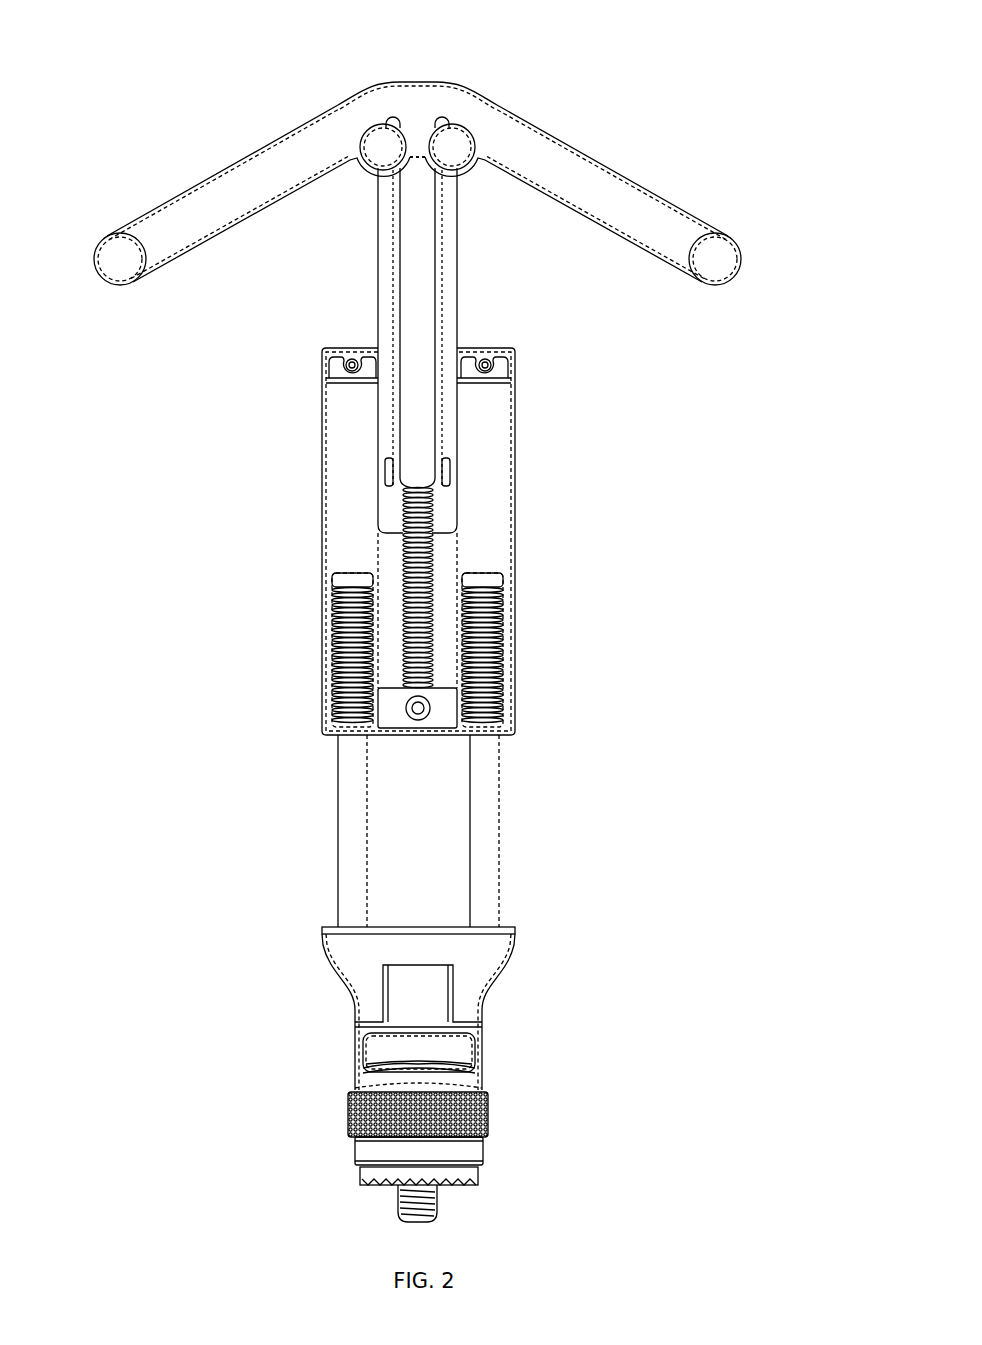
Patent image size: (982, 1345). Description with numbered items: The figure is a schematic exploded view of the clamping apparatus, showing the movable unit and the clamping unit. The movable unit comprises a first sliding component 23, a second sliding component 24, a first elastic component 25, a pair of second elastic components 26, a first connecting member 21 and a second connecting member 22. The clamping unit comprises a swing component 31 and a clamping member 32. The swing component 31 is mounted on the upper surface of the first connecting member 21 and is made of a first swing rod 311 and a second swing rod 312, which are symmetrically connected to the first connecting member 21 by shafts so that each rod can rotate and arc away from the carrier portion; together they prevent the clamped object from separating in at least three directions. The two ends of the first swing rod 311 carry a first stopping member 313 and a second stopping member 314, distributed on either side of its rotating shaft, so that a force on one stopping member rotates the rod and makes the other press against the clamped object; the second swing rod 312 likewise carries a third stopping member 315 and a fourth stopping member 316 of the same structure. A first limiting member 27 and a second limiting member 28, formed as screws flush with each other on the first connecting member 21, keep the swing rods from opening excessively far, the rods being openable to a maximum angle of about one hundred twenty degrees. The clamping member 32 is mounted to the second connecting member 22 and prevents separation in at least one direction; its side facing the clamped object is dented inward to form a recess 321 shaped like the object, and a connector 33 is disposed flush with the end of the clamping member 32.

The first connecting member 21 is at (470, 87).
The second connecting member 22 is at (513, 958).
The first sliding component 23 is at (457, 278).
The second sliding component 24 is at (367, 827).
The first elastic component 25 is at (458, 545).
The second elastic components 26 is at (332, 640).
The first limiting member 27 is at (390, 117).
The second limiting member 28 is at (440, 117).
The swing component 31 is at (435, 157).
The first swing rod 311 is at (307, 120).
The second swing rod 312 is at (606, 166).
The first stopping member 313 is at (372, 130).
The second stopping member 314 is at (113, 236).
The third stopping member 315 is at (473, 128).
The fourth stopping member 316 is at (725, 238).
The clamping member 32 is at (483, 1043).
The recess 321 is at (357, 1072).
The connector 33 is at (490, 1122).